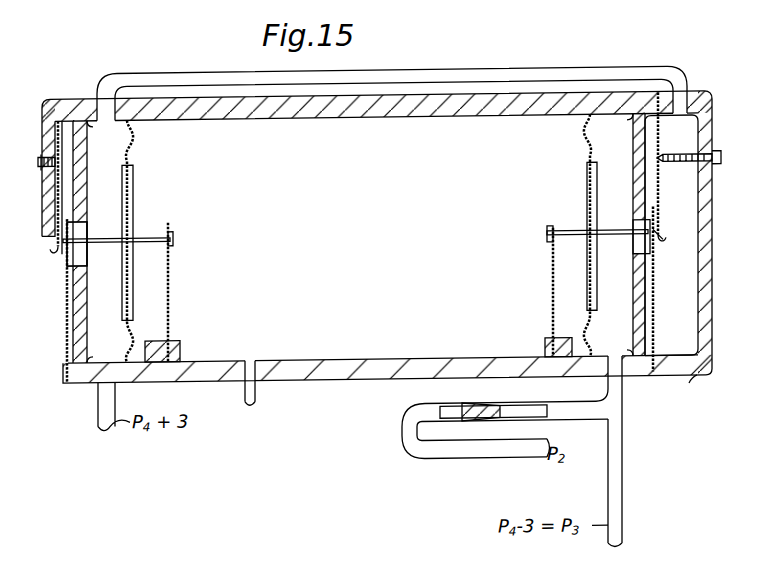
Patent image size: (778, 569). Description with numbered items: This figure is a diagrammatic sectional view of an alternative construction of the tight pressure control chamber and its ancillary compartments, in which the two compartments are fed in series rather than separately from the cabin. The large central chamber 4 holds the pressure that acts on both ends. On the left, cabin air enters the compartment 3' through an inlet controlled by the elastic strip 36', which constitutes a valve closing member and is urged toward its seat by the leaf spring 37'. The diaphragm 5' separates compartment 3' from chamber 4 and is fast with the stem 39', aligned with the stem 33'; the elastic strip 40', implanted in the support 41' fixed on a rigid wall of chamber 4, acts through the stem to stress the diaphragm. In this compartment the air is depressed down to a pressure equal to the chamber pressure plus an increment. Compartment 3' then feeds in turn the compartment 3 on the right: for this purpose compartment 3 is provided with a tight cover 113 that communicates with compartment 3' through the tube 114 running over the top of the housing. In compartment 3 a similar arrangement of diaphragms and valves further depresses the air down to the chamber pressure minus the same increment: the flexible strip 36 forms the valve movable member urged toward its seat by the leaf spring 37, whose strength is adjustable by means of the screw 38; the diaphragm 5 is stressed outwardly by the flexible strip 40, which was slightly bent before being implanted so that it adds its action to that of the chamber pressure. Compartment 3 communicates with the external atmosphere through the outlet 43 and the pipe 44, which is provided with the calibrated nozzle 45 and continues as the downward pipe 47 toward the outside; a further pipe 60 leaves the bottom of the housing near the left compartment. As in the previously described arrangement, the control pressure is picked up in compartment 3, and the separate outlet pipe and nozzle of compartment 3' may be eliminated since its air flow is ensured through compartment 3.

The tight cover 113 is at (378, 249).
The chamber 4 is at (376, 238).
The tube 114 is at (485, 76).
The screw 38 is at (718, 160).
The diaphragm 5' is at (146, 241).
The diaphragm 5 is at (575, 235).
The stem 39' is at (138, 231).
The stem 33' is at (126, 233).
The elastic strip 40' is at (190, 292).
The support 41' is at (176, 328).
The leaf spring 37' is at (51, 200).
The elastic strip 36' is at (52, 300).
The compartment 3' is at (98, 242).
The compartment 3 is at (622, 235).
The flexible strip 40 is at (576, 291).
The leaf spring 37 is at (673, 166).
The flexible strip 36 is at (669, 288).
The outlet pipe 60 is at (257, 401).
The pipe 47 is at (622, 470).
The outlet 43 is at (622, 400).
The pipe 44 is at (567, 427).
The calibrated nozzle 45 is at (500, 405).